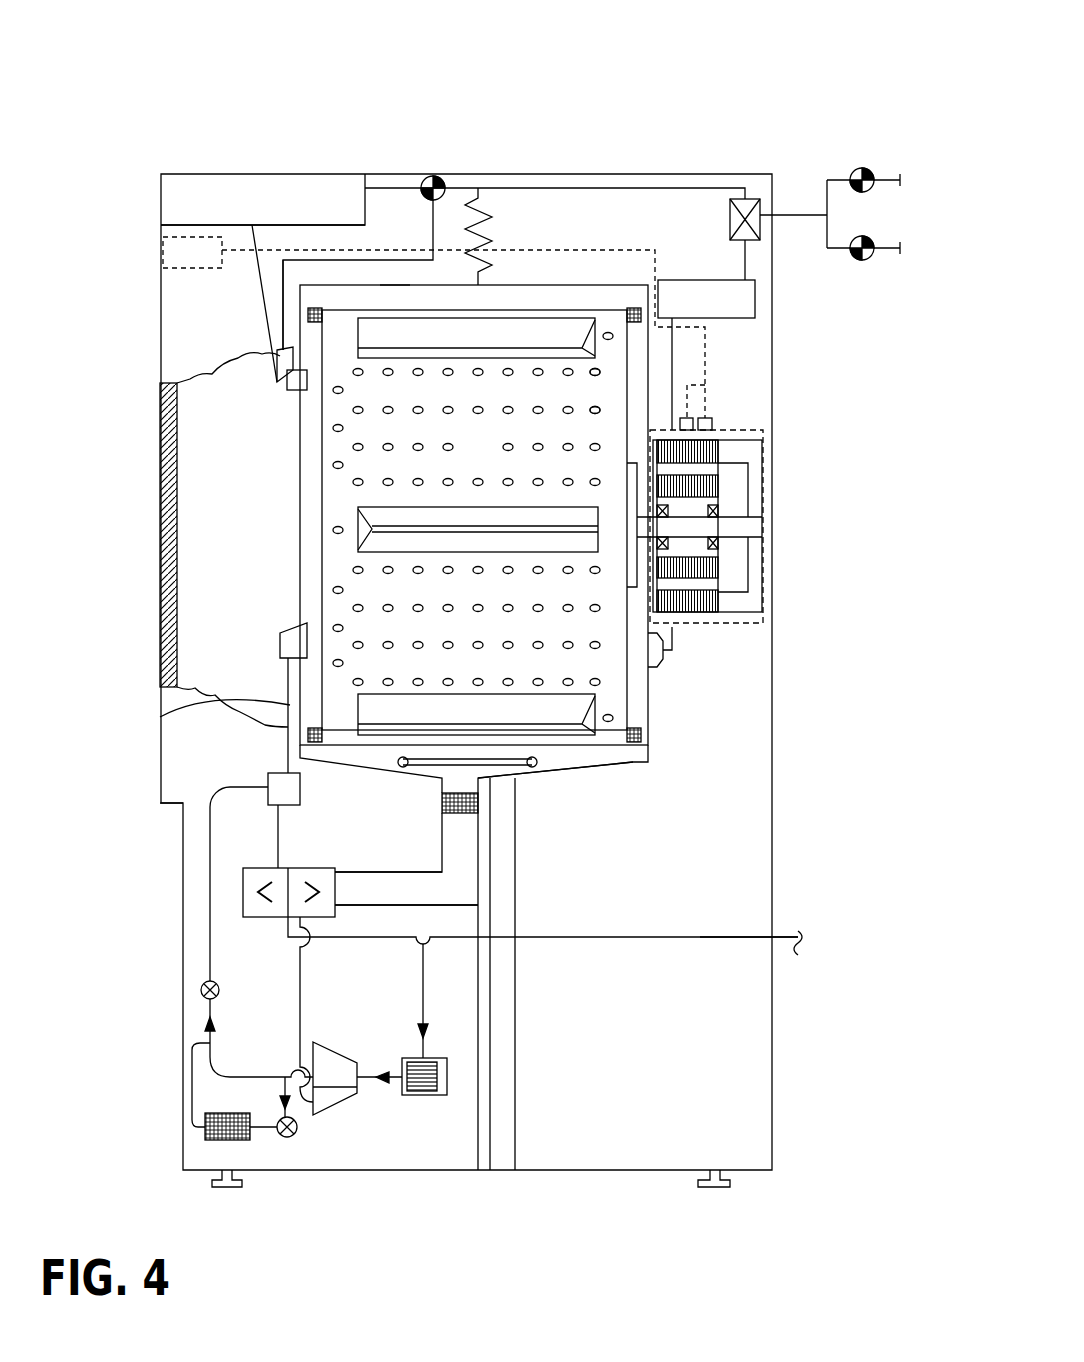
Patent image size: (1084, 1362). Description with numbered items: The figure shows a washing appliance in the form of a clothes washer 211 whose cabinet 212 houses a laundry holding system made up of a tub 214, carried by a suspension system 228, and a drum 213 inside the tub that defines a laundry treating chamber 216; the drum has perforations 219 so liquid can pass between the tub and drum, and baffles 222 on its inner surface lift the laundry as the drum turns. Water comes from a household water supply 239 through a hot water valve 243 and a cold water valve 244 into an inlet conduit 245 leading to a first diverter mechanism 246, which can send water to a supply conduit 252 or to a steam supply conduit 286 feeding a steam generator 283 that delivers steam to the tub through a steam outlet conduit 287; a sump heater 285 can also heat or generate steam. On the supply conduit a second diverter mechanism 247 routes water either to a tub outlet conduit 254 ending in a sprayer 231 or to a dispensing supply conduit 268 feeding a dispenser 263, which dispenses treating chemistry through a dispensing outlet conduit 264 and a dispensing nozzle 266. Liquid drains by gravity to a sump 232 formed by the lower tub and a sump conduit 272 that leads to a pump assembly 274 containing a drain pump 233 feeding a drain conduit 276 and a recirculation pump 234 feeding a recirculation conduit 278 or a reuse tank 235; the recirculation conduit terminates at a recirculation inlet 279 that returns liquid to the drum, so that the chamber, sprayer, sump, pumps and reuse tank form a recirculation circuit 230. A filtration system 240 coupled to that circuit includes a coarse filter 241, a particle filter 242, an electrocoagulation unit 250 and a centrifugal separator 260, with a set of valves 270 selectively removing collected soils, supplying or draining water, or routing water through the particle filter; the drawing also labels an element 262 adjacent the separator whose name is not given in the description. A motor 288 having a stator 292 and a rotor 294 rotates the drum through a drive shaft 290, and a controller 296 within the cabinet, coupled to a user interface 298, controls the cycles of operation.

The clothes washer 211 is at (723, 23).
The cabinet 212 is at (688, 174).
The drum 213 is at (353, 247).
The tub 214 is at (513, 285).
The laundry treating chamber 216 is at (492, 441).
The perforations 219 is at (599, 371).
The baffles 222 is at (575, 718).
The suspension system 228 is at (467, 228).
The recirculation circuit 230 is at (150, 728).
The sprayer 231 is at (303, 355).
The sump 232 is at (522, 780).
The drain pump 233 is at (345, 845).
The recirculation pump 234 is at (260, 866).
The reuse tank 235 is at (285, 782).
The household water supply 239 is at (890, 164).
The filtration system 240 is at (178, 1078).
The coarse filter 241 is at (441, 803).
The particle filter 242 is at (205, 1132).
The hot water valve 243 is at (866, 167).
The cold water valve 244 is at (864, 261).
The inlet conduit 245 is at (792, 214).
The first diverter mechanism 246 is at (748, 199).
The second diverter mechanism 247 is at (425, 176).
The electrocoagulation unit 250 is at (432, 1097).
The supply conduit 252 is at (608, 187).
The tub outlet conduit 254 is at (350, 258).
The centrifugal separator 260 is at (330, 1117).
The blower 262 is at (342, 1093).
The dispenser 263 is at (305, 197).
The dispensing outlet conduit 264 is at (260, 283).
The dispensing nozzle 266 is at (287, 388).
The dispensing supply conduit 268 is at (395, 292).
The set of valves 270 is at (203, 985).
The sump conduit 272 is at (460, 883).
The pump assembly 274 is at (263, 919).
The drain conduit 276 is at (798, 950).
The recirculation conduit 278 is at (278, 823).
The recirculation inlet 279 is at (283, 643).
The steam generator 283 is at (755, 300).
The sump heater 285 is at (540, 767).
The steam supply conduit 286 is at (747, 248).
The steam outlet conduit 287 is at (672, 648).
The motor 288 is at (713, 441).
The drive shaft 290 is at (732, 527).
The stator 292 is at (763, 433).
The rotor 294 is at (715, 481).
The controller 296 is at (204, 276).
The user interface 298 is at (158, 250).